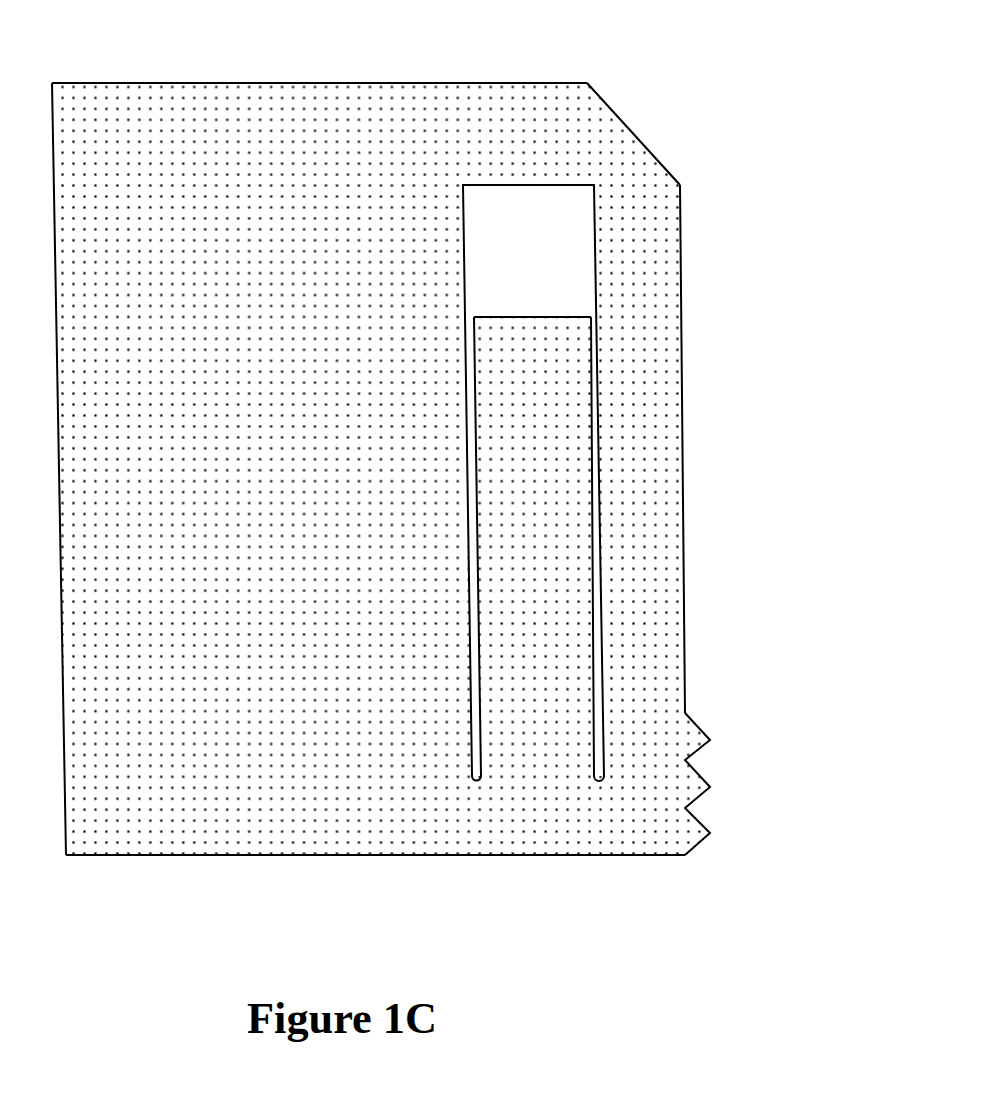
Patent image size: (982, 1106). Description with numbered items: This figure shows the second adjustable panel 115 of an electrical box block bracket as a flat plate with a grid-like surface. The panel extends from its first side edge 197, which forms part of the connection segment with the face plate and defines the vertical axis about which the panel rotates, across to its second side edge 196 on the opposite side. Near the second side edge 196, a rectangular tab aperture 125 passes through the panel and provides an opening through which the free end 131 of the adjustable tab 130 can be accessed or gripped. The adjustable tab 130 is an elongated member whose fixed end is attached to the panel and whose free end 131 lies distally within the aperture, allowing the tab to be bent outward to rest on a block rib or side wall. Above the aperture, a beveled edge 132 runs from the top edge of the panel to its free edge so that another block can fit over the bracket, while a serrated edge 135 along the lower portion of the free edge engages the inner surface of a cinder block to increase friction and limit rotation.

The second adjustable panel 115 is at (318, 405).
The tab aperture 125 is at (551, 247).
The adjustable tab 130 is at (543, 507).
The free end 131 is at (570, 314).
The beveled edge 132 is at (621, 121).
The serrated edge 135 is at (719, 820).
The second side edge 196 is at (688, 530).
The first side edge 197 is at (64, 572).